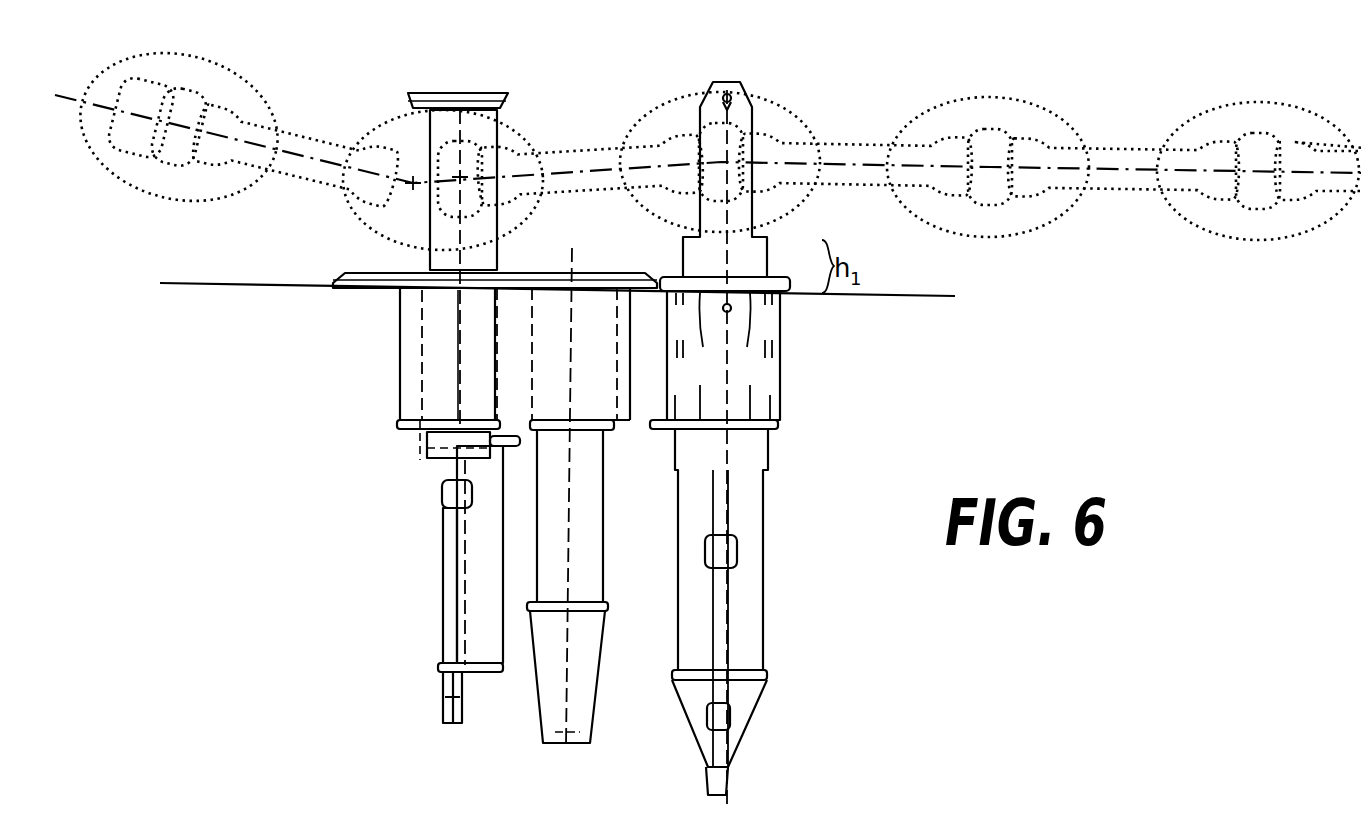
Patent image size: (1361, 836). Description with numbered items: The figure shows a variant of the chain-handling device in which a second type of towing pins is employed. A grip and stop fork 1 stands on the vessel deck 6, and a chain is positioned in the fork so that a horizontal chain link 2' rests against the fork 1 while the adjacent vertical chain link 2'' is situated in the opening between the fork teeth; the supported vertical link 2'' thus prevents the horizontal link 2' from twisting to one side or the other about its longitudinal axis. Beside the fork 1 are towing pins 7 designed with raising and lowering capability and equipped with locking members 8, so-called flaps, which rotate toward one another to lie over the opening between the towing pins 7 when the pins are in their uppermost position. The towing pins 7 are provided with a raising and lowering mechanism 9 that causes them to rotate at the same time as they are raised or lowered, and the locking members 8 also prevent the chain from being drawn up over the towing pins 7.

The grip and stop fork 1 is at (737, 107).
The horizontal chain link 2' is at (863, 109).
The vertical chain link 2'' is at (641, 64).
The vessel deck 6 is at (928, 297).
The towing pins 7 is at (487, 130).
The locking members 8 is at (427, 93).
The raising and lowering mechanism 9 is at (427, 480).